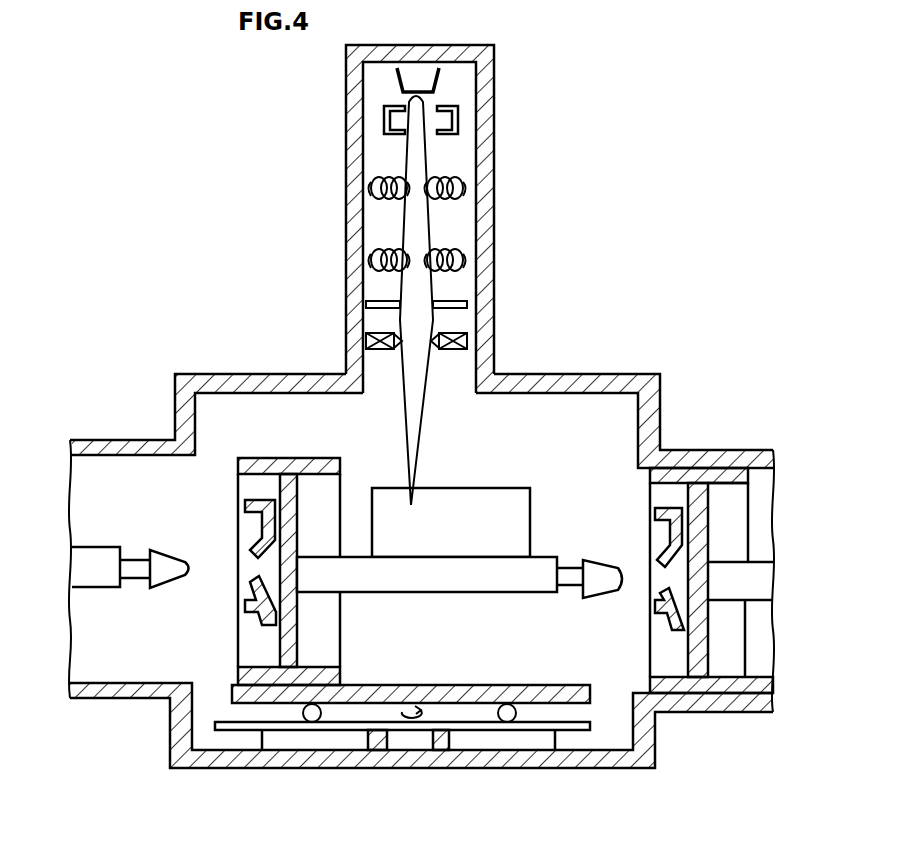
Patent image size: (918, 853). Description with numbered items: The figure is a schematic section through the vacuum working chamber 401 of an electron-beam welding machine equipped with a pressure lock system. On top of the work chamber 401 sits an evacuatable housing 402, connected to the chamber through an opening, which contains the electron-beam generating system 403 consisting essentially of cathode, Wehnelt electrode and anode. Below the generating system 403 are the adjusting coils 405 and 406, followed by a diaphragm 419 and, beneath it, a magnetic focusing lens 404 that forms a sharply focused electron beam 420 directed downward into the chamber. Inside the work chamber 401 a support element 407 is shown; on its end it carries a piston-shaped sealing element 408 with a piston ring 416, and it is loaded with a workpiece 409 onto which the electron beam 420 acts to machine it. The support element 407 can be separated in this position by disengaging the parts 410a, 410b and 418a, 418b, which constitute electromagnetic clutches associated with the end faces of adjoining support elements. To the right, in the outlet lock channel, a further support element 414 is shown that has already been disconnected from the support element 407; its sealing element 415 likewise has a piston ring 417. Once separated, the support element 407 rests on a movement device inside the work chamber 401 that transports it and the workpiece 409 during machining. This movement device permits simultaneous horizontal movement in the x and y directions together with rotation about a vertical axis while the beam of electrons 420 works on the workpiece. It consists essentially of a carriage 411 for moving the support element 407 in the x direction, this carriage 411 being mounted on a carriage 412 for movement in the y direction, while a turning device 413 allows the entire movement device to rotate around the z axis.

The vacuum working chamber 401 is at (358, 412).
The evacuatable housing 402 is at (348, 222).
The electron-beam generating system 403 is at (392, 76).
The magnetic focusing lens 404 is at (520, 334).
The adjusting coil 405 is at (472, 191).
The adjusting coil 406 is at (478, 259).
The support element 407 is at (520, 592).
The piston-shaped sealing element 408 is at (297, 625).
The workpiece 409 is at (490, 517).
The electromagnetic clutch part 410a is at (603, 572).
The electromagnetic clutch part 410b is at (680, 562).
The carriage 411 is at (556, 690).
The carriage 412 is at (503, 742).
The turning device 413 is at (418, 742).
The support element 414 is at (762, 576).
The sealing element 415 is at (700, 640).
The piston ring 416 is at (245, 680).
The piston ring 417 is at (735, 690).
The electromagnetic clutch part 418a is at (150, 583).
The electromagnetic clutch part 418b is at (255, 592).
The diaphragm 419 is at (470, 298).
The electron beam 420 is at (452, 300).